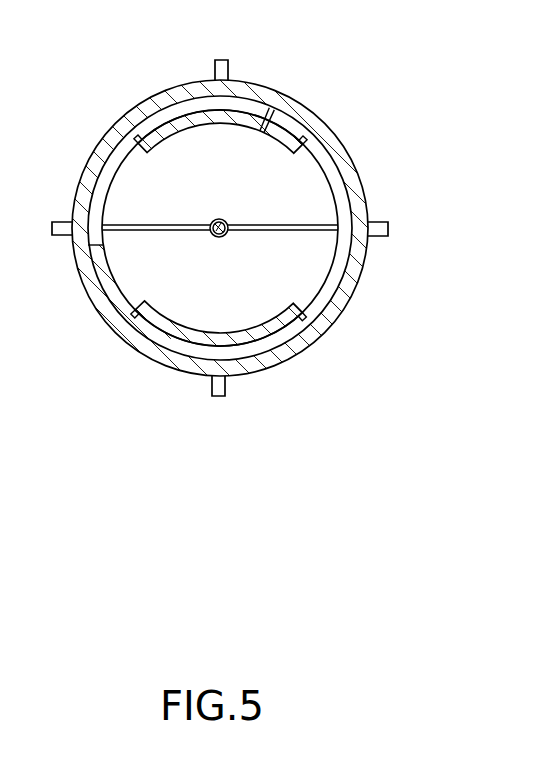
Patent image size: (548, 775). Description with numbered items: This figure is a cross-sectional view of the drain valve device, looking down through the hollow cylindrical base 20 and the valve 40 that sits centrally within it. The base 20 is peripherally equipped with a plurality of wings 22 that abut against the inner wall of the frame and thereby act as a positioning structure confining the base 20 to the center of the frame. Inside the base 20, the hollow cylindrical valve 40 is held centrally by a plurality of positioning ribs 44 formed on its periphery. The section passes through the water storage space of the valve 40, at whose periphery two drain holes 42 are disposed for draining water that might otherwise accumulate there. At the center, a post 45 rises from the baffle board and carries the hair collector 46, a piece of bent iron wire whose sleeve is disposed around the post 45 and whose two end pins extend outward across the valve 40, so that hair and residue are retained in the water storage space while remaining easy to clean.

The base 20 is at (334, 142).
The wings 22 is at (223, 61).
The valve 40 is at (170, 320).
The drain hole 42 is at (112, 185).
The positioning ribs 44 is at (292, 327).
The post 45 is at (228, 223).
The hair collector 46 is at (158, 229).